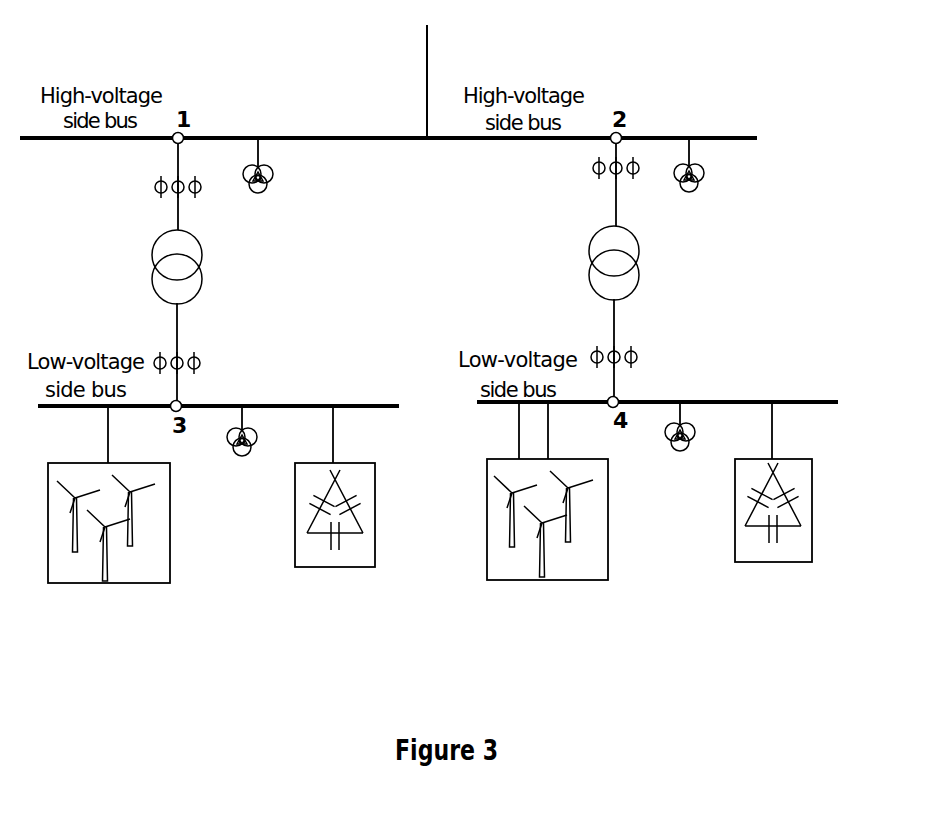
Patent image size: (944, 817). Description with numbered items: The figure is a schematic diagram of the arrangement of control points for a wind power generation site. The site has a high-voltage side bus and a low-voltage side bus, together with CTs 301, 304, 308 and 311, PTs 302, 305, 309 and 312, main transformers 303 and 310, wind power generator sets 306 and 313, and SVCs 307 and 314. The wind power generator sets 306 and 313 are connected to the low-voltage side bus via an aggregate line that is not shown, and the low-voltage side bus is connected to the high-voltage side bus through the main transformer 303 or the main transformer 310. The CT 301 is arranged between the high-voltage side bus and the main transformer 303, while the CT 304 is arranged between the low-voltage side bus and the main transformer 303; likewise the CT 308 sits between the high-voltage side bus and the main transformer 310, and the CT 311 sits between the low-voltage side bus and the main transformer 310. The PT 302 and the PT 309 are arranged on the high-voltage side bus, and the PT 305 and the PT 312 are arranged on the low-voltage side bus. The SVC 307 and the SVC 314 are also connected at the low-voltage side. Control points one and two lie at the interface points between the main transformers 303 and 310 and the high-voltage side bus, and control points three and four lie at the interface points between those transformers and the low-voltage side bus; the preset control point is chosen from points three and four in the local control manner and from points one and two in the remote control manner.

The CT 301 is at (157, 186).
The PT 302 is at (268, 176).
The main transformer 303 is at (200, 262).
The CT 304 is at (199, 363).
The PT 305 is at (246, 456).
The wind power generator set 306 is at (171, 547).
The SVC 307 is at (375, 495).
The CT 308 is at (590, 168).
The PT 309 is at (707, 172).
The main transformer 310 is at (637, 257).
The CT 311 is at (636, 355).
The PT 312 is at (686, 452).
The wind power generator set 313 is at (609, 538).
The SVC 314 is at (812, 535).